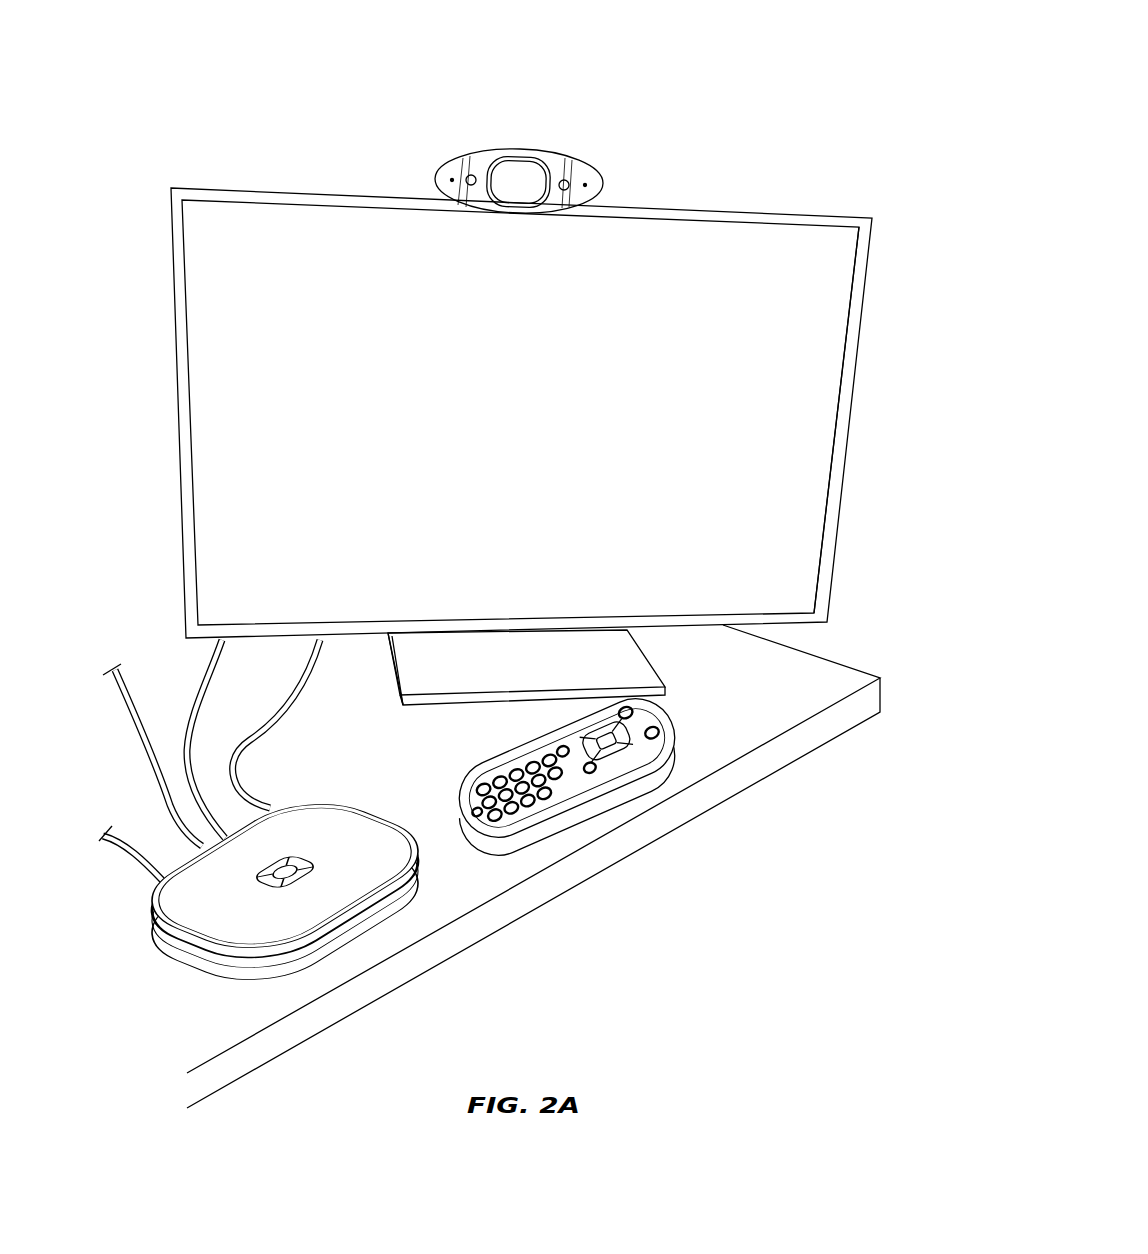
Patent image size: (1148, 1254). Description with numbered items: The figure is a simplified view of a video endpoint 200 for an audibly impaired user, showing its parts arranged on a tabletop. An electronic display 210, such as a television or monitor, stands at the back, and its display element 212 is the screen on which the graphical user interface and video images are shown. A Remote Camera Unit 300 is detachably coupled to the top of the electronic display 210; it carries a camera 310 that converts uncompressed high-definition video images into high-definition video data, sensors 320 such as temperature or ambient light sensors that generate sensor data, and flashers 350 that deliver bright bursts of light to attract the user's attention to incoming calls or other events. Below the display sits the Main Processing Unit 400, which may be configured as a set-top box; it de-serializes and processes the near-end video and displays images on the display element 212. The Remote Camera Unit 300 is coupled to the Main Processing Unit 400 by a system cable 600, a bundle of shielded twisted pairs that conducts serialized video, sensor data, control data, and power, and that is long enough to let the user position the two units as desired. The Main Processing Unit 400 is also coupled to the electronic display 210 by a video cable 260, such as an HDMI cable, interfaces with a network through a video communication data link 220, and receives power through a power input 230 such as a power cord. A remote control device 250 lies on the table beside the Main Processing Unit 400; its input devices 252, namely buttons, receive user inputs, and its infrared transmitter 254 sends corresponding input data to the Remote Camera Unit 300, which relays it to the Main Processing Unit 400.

The video endpoint 200 is at (709, 58).
The electronic display 210 is at (795, 216).
The display element 212 is at (854, 300).
The video communication data link 220 is at (135, 723).
The power input 230 is at (515, 208).
The remote control device 250 is at (590, 813).
The input devices 252 is at (563, 790).
The infrared transmitter 254 is at (668, 722).
The video cable 260 is at (197, 703).
The Remote Camera Unit 300 is at (497, 150).
The camera 310 is at (527, 180).
The sensors 320 is at (452, 178).
The flashers 350 is at (437, 180).
The Main Processing Unit 400 is at (325, 797).
The system cable 600 is at (273, 717).